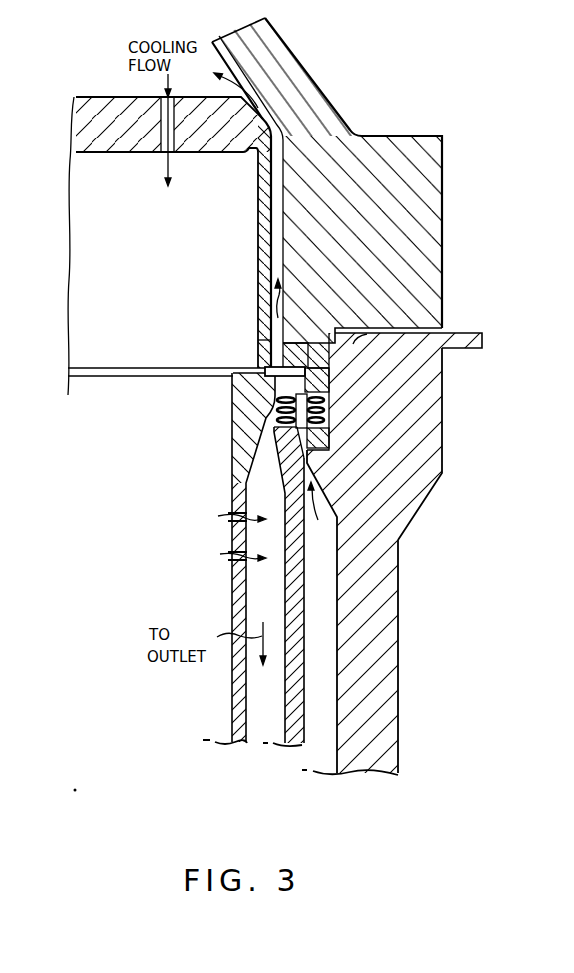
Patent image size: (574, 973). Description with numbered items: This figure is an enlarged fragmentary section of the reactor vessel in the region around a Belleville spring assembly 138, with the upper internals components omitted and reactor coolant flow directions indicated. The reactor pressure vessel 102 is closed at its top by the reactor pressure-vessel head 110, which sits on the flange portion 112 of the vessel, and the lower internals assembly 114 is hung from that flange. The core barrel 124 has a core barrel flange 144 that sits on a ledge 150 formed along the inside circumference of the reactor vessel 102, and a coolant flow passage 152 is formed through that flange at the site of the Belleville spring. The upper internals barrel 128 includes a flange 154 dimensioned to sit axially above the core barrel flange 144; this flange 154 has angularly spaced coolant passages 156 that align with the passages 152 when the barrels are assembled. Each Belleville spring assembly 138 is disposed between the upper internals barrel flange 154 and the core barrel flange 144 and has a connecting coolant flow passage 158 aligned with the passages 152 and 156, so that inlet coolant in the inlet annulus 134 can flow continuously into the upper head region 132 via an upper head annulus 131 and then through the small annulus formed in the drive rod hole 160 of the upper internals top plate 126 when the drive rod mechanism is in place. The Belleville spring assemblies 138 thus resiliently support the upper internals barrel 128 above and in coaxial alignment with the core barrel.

The reactor pressure vessel 102 is at (400, 714).
The reactor pressure-vessel head 110 is at (309, 68).
The flange portion 112 is at (358, 338).
The lower internals assembly 114 is at (294, 750).
The core barrel 124 is at (304, 628).
The upper internals top plate 126 is at (88, 106).
The upper internals barrel 128 is at (240, 748).
The upper head annulus 131 is at (285, 258).
The upper head region 132 is at (103, 77).
The inlet annulus 134 is at (320, 578).
The Belleville spring assembly 138 is at (332, 406).
The core barrel flange 144 is at (323, 438).
The ledge 150 is at (320, 454).
The coolant flow passage 152 is at (302, 460).
The upper internals barrel flange 154 is at (323, 383).
The coolant passages 156 is at (265, 363).
The connecting coolant flow passage 158 is at (314, 414).
The drive rod hole 160 is at (163, 140).